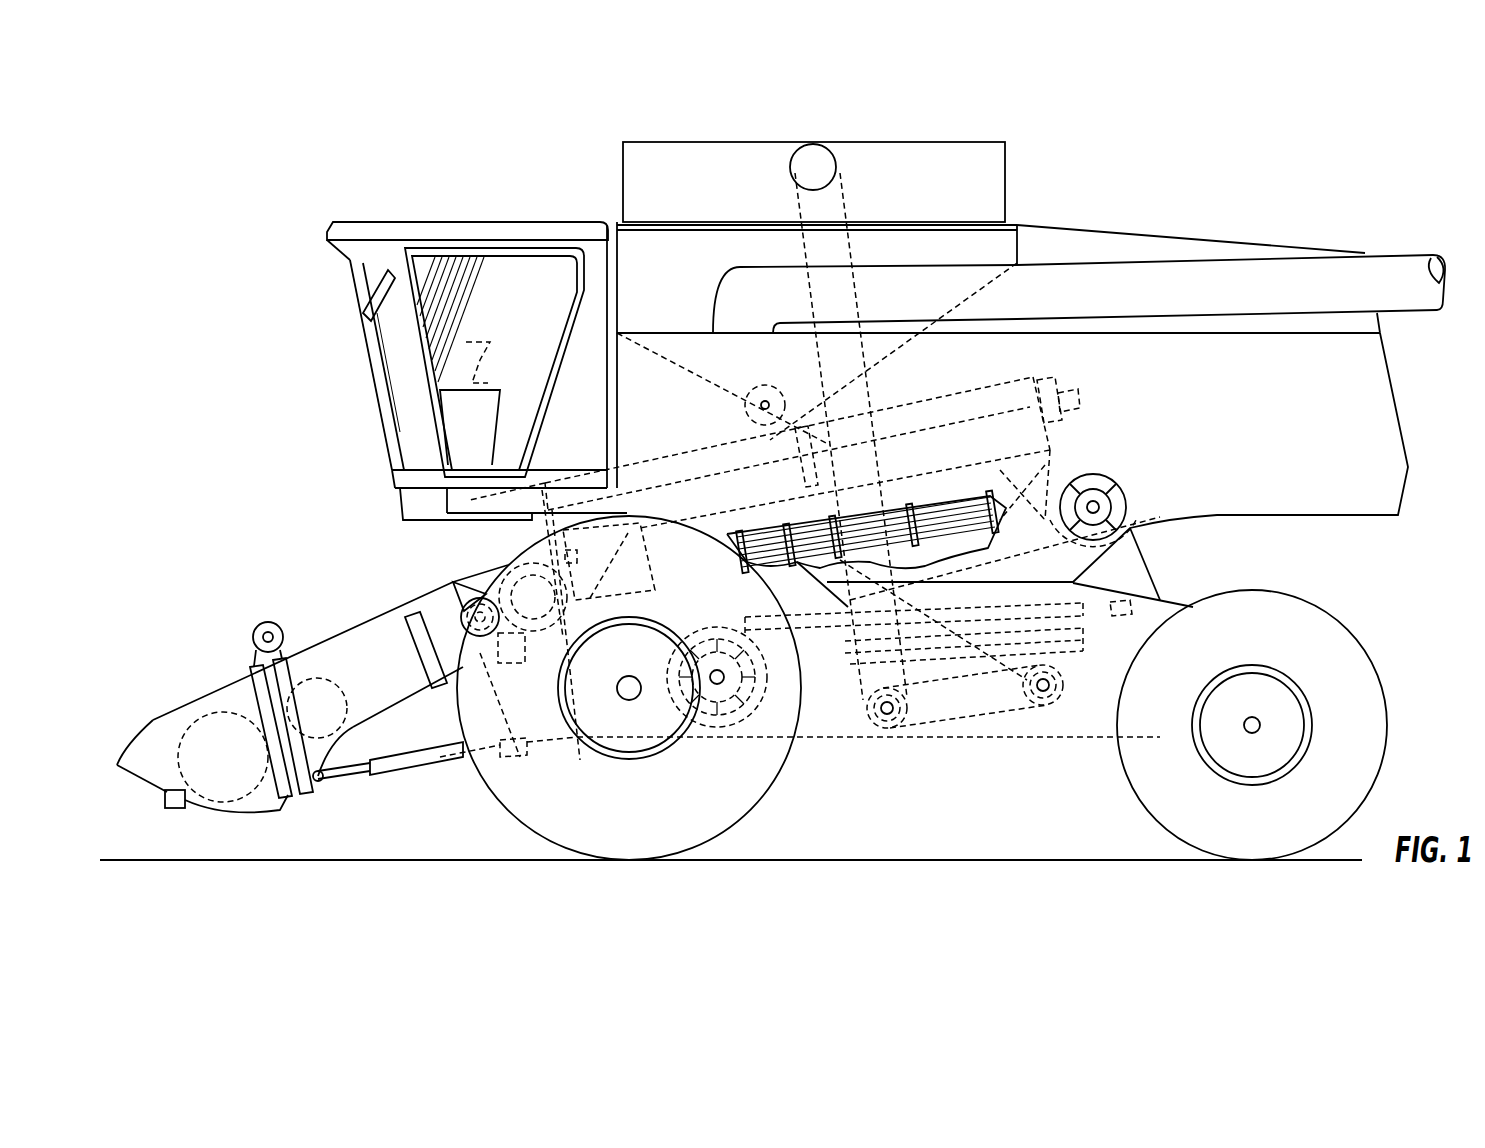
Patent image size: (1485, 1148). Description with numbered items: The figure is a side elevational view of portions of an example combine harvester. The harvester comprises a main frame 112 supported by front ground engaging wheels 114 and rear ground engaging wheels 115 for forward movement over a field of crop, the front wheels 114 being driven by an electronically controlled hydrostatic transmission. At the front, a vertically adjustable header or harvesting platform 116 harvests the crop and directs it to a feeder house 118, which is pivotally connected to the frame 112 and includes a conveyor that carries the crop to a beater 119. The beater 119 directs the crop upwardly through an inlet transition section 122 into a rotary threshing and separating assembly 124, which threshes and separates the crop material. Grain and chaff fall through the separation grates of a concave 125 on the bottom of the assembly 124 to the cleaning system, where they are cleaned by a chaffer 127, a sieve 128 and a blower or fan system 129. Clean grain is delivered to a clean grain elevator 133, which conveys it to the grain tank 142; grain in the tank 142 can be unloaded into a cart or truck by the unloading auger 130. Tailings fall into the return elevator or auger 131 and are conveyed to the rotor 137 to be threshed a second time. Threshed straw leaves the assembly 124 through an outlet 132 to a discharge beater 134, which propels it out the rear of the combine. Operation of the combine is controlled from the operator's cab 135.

The main frame 112 is at (1398, 398).
The front ground engaging wheels 114 is at (452, 581).
The rear ground engaging wheels 115 is at (1386, 702).
The header 116 is at (172, 685).
The feeder house 118 is at (373, 640).
The beater 119 is at (498, 560).
The inlet transition section 122 is at (545, 548).
The rotary threshing and separating assembly 124 is at (707, 470).
The concave 125 is at (890, 478).
The chaffer 127 is at (1095, 616).
The sieve 128 is at (1072, 662).
The fan system 129 is at (704, 735).
The unloading auger 130 is at (1370, 304).
The return elevator 131 is at (1040, 703).
The outlet 132 is at (1087, 432).
The clean grain elevator 133 is at (863, 318).
The discharge beater 134 is at (1132, 480).
The operator's cab 135 is at (468, 222).
The rotor 137 is at (1022, 392).
The grain tank 142 is at (1020, 247).